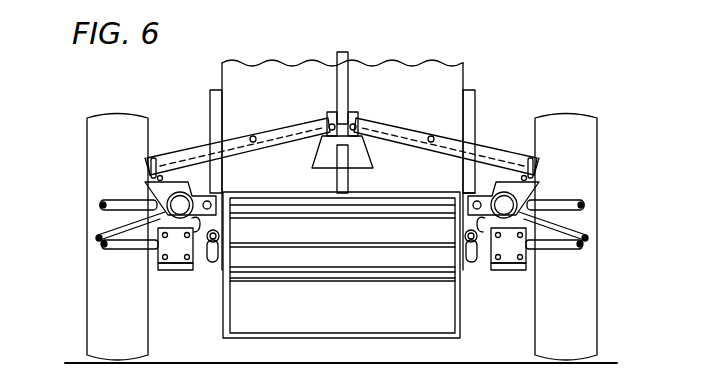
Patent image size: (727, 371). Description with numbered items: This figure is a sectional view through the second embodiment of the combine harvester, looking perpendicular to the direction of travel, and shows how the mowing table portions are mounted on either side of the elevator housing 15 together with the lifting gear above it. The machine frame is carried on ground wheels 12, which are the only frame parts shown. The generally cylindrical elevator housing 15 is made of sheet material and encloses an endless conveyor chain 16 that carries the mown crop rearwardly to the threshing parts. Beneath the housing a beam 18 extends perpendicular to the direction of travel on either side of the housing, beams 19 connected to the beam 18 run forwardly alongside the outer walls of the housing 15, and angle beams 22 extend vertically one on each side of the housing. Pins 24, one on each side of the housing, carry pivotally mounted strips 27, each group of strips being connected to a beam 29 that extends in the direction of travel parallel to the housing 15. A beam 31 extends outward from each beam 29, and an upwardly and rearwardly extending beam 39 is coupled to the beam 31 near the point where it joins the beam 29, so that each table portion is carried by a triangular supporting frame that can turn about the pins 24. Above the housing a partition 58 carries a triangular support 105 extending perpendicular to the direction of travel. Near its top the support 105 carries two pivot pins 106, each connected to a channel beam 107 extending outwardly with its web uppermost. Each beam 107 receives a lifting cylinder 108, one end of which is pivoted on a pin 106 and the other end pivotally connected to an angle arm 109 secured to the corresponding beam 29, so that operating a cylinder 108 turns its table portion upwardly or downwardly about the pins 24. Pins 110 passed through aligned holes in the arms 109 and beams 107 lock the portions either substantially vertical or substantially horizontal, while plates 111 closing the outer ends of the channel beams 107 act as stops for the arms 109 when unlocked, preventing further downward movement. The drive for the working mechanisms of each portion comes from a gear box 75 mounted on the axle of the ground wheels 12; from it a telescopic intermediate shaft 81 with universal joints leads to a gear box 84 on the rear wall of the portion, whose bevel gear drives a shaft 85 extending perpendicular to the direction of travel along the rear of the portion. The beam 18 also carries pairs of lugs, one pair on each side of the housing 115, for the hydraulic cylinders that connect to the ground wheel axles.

The ground wheels 12 is at (92, 340).
The elevator housing 15 is at (222, 328).
The endless conveyor chain 16 is at (310, 280).
The beam 18 is at (486, 270).
The beams 19 is at (218, 256).
The angle beams 22 is at (473, 126).
The pins 24 is at (207, 201).
The strip 27 is at (470, 190).
The beam 29 is at (184, 200).
The beam 31 is at (98, 205).
The beam 39 is at (96, 236).
The partition 58 is at (340, 88).
The gear box 75 is at (220, 236).
The telescopic intermediate shaft 81 is at (196, 248).
The gear box 84 is at (180, 270).
The shaft 85 is at (122, 250).
The triangular support 105 is at (372, 162).
The pivot pins 106 is at (332, 112).
The channel beam 107 is at (280, 122).
The lifting cylinder 108 is at (272, 146).
The angle arm 109 is at (150, 182).
The pins 110 is at (150, 170).
The plates 111 is at (146, 160).
The housing 115 is at (165, 270).